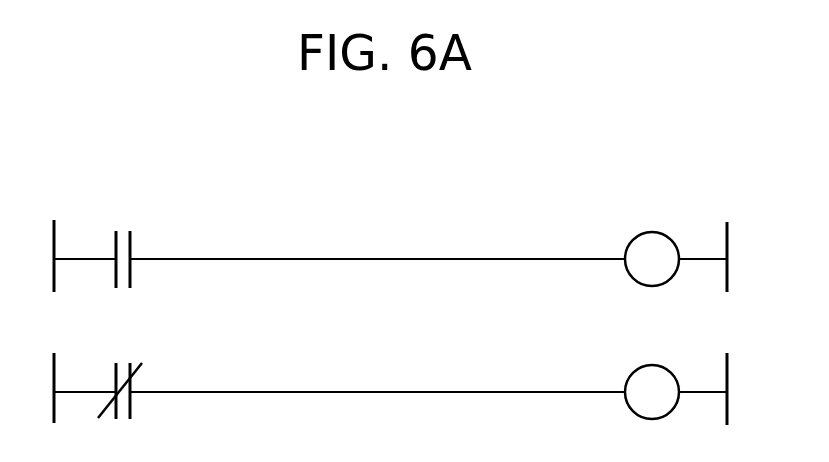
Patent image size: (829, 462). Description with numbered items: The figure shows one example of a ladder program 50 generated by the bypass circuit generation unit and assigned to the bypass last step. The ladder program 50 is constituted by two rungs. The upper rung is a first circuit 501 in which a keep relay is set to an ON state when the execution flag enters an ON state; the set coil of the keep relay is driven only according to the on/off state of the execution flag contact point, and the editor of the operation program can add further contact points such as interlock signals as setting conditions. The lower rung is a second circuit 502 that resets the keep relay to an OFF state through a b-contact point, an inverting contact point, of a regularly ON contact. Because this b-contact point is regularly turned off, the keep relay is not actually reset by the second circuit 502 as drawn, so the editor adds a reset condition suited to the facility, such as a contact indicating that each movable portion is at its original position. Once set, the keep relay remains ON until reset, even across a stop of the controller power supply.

The ladder program 50 is at (240, 212).
The first circuit 501 is at (680, 193).
The second circuit 502 is at (700, 337).